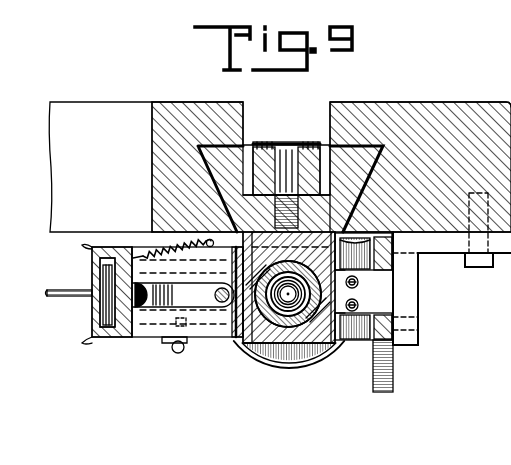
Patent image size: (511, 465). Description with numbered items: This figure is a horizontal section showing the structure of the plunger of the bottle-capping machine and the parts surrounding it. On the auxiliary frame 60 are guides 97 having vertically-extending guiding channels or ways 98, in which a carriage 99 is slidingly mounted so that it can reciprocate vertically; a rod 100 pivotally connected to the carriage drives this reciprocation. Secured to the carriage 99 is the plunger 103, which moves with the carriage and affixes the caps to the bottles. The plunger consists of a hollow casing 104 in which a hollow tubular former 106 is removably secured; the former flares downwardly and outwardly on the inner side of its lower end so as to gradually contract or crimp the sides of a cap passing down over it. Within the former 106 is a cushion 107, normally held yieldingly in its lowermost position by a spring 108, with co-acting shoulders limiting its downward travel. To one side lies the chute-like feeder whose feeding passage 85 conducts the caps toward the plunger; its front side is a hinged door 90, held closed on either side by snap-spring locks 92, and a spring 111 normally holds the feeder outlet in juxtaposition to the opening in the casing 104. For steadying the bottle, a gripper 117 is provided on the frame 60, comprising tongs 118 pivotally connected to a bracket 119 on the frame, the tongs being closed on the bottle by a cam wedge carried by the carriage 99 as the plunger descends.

The auxiliary frame 60 is at (442, 117).
The feeding passage 85 is at (96, 317).
The door 90 is at (108, 297).
The snap-spring locks 92 is at (93, 252).
The guides 97 is at (177, 116).
The guiding channels or ways 98 is at (212, 147).
The carriage 99 is at (245, 145).
The rod 100 is at (322, 144).
The plunger 103 is at (252, 353).
The hollow casing 104 is at (233, 340).
The hollow tubular former 106 is at (303, 358).
The cushion 107 is at (292, 370).
The spring 108 is at (277, 362).
The spring 111 is at (150, 235).
The gripper 117 is at (397, 319).
The tongs 118 is at (356, 271).
The bracket 119 is at (420, 320).